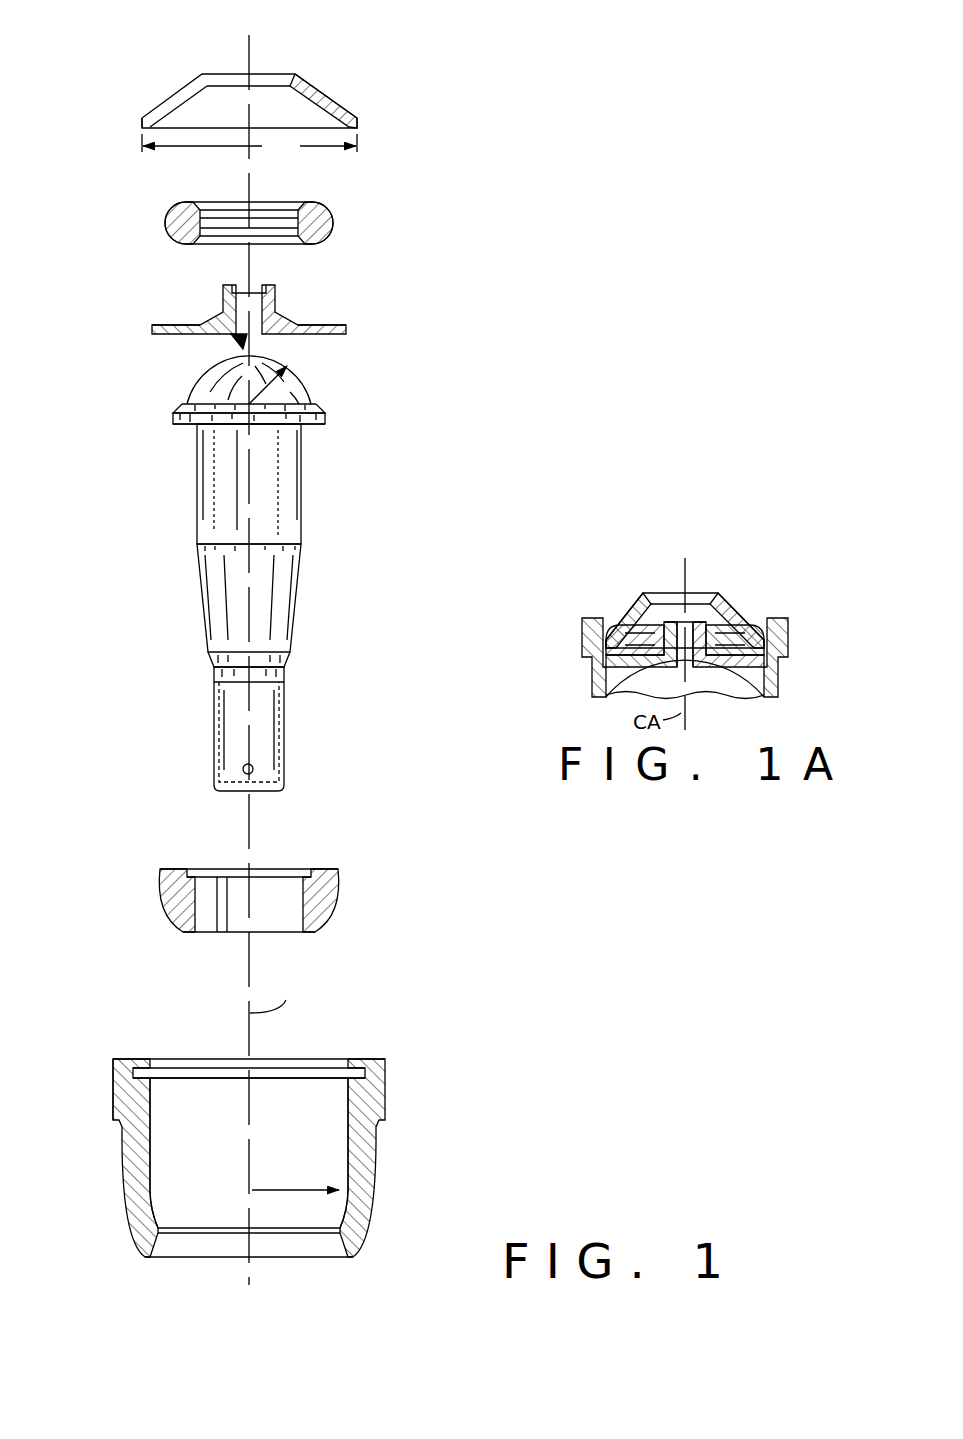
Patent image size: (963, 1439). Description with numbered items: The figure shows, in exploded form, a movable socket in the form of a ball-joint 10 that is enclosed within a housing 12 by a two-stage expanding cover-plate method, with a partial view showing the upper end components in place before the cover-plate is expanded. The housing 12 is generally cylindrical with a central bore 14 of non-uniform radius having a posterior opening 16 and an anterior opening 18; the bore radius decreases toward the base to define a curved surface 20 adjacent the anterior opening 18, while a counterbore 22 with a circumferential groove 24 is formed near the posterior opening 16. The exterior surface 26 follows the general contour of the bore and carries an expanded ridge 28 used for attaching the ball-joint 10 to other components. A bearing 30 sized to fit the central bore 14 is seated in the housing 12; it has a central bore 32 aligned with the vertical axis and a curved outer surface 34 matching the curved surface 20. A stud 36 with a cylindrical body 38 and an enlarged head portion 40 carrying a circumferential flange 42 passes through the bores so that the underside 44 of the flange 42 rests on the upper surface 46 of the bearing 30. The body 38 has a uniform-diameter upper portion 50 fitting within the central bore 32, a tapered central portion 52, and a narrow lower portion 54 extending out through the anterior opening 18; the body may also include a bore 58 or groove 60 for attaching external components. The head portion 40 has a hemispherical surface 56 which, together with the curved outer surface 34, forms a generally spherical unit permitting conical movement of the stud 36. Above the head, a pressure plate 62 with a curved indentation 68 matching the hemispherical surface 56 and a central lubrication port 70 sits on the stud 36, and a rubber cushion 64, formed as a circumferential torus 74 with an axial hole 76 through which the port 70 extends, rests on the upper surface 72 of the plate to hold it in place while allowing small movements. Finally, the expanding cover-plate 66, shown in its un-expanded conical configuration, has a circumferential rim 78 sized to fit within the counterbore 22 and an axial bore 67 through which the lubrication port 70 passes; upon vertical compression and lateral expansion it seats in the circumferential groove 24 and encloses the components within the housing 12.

In FIG. 1, the ball-joint 10 is at (358, 538).
In FIG. 1, the housing 12 is at (373, 1155).
In FIG. 1A, the housing 12 is at (782, 668).
In FIG. 1, the central bore 14 is at (315, 1098).
In FIG. 1, the posterior opening 16 is at (302, 1053).
In FIG. 1, the anterior opening 18 is at (282, 1268).
In FIG. 1, the curved surface 20 is at (337, 1218).
In FIG. 1, the counterbore 22 is at (345, 1053).
In FIG. 1, the circumferential groove 24 is at (170, 1057).
In FIG. 1, the exterior surface 26 is at (123, 1178).
In FIG. 1, the expanded ridge 28 is at (113, 1102).
In FIG. 1, the bearing 30 is at (340, 882).
In FIG. 1, the central bore 32 is at (282, 908).
In FIG. 1, the curved outer surface 34 is at (167, 907).
In FIG. 1, the stud 36 is at (188, 510).
In FIG. 1, the cylindrical body 38 is at (284, 498).
In FIG. 1, the head portion 40 is at (317, 385).
In FIG. 1A, the head portion 40 is at (703, 679).
In FIG. 1, the circumferential flange 42 is at (328, 412).
In FIG. 1, the underside 44 is at (178, 428).
In FIG. 1, the upper surface 46 is at (323, 867).
In FIG. 1, the upper portion 50 is at (305, 473).
In FIG. 1, the tapered central portion 52 is at (302, 597).
In FIG. 1, the lower portion 54 is at (288, 708).
In FIG. 1, the hemispherical surface 56 is at (195, 378).
In FIG. 1, the bore 58 is at (253, 767).
In FIG. 1, the groove 60 is at (217, 727).
In FIG. 1, the pressure plate 62 is at (360, 325).
In FIG. 1A, the pressure plate 62 is at (603, 692).
In FIG. 1, the rubber cushion 64 is at (350, 213).
In FIG. 1A, the rubber cushion 64 is at (597, 647).
In FIG. 1, the expanding cover-plate 66 is at (350, 84).
In FIG. 1A, the expanding cover-plate 66 is at (748, 605).
In FIG. 1, the axial bore 67 is at (268, 68).
In FIG. 1, the curved indentation 68 is at (242, 347).
In FIG. 1, the lubrication port 70 is at (217, 295).
In FIG. 1A, the lubrication port 70 is at (663, 622).
In FIG. 1, the upper surface 72 is at (322, 322).
In FIG. 1, the circumferential torus 74 is at (176, 202).
In FIG. 1, the axial hole 76 is at (263, 223).
In FIG. 1, the circumferential rim 78 is at (128, 118).